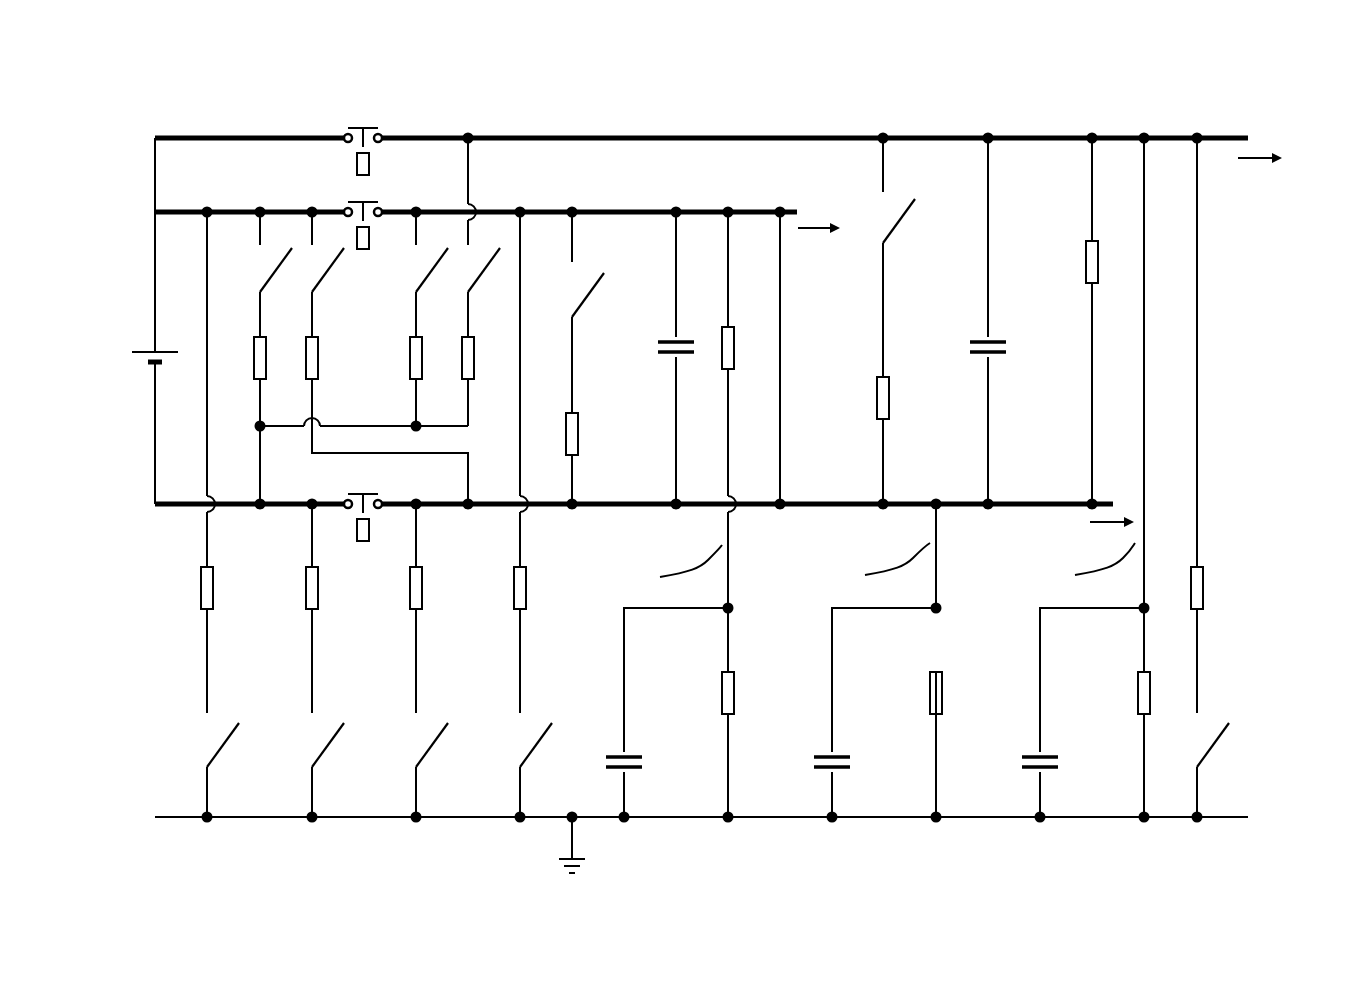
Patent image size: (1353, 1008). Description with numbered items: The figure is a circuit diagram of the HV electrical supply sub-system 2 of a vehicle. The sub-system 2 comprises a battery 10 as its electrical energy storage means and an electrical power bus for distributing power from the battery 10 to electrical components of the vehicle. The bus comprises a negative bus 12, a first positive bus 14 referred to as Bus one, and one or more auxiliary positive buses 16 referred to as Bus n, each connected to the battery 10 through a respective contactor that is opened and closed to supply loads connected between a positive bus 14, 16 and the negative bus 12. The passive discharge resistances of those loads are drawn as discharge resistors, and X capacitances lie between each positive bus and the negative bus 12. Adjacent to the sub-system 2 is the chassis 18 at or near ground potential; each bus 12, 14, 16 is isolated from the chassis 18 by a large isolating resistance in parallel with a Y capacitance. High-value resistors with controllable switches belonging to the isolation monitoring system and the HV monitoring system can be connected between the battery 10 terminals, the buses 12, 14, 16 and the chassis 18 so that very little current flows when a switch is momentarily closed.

The HV electrical supply sub-system 2 is at (526, 78).
The battery 10 is at (134, 380).
The negative bus 12 is at (1041, 498).
The positive bus 14 is at (632, 205).
The auxiliary bus 16 is at (634, 132).
The chassis 18 is at (360, 826).